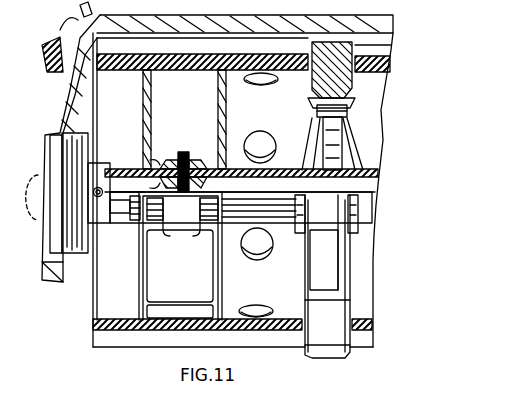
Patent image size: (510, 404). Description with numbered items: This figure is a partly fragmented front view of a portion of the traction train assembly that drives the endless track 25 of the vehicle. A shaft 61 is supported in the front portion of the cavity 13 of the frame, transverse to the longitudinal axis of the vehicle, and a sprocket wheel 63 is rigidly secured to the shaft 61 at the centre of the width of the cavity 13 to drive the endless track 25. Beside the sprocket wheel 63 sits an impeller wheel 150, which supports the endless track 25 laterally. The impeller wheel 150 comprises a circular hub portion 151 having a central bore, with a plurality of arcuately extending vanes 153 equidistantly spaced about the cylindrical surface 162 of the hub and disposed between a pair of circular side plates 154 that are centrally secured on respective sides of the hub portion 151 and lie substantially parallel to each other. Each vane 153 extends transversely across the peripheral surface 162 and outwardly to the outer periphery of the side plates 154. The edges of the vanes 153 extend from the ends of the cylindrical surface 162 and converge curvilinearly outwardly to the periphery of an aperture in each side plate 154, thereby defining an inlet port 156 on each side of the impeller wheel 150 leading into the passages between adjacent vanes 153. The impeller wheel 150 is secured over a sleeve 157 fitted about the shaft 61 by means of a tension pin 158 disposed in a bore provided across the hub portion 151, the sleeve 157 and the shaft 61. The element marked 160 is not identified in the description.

The cavity 13 is at (78, 96).
The endless track 25 is at (280, 42).
The shaft 61 is at (357, 187).
The sprocket wheel 63 is at (337, 253).
The impeller wheel 150 is at (133, 287).
The hub portion 151 is at (158, 160).
The vane 153 is at (218, 102).
The side plate 154 is at (140, 246).
The inlet port 156 is at (152, 143).
The sleeve 157 is at (283, 167).
The tension pin 158 is at (190, 150).
The aperture 160 is at (262, 256).
The cylindrical surface 162 is at (176, 157).